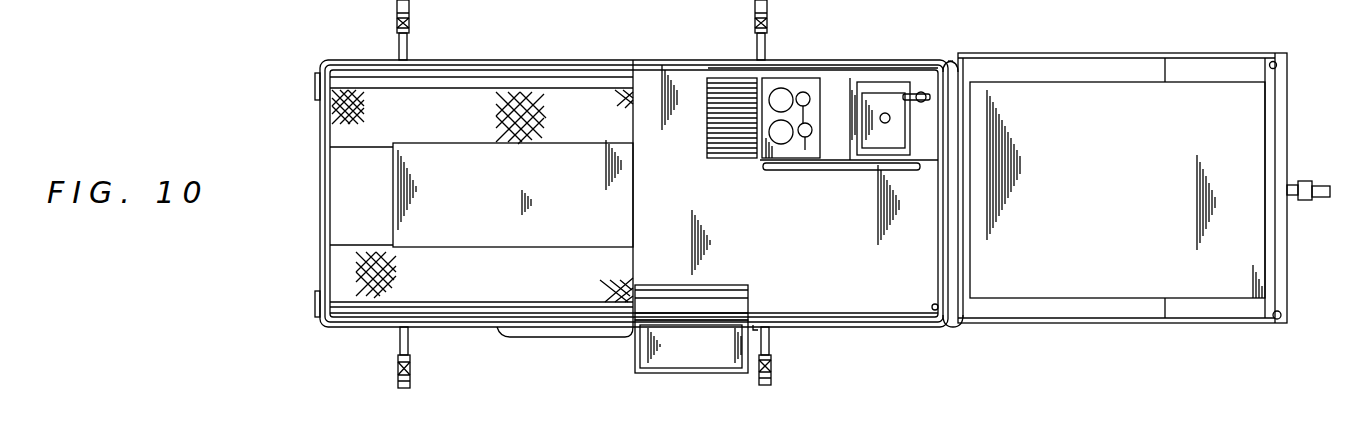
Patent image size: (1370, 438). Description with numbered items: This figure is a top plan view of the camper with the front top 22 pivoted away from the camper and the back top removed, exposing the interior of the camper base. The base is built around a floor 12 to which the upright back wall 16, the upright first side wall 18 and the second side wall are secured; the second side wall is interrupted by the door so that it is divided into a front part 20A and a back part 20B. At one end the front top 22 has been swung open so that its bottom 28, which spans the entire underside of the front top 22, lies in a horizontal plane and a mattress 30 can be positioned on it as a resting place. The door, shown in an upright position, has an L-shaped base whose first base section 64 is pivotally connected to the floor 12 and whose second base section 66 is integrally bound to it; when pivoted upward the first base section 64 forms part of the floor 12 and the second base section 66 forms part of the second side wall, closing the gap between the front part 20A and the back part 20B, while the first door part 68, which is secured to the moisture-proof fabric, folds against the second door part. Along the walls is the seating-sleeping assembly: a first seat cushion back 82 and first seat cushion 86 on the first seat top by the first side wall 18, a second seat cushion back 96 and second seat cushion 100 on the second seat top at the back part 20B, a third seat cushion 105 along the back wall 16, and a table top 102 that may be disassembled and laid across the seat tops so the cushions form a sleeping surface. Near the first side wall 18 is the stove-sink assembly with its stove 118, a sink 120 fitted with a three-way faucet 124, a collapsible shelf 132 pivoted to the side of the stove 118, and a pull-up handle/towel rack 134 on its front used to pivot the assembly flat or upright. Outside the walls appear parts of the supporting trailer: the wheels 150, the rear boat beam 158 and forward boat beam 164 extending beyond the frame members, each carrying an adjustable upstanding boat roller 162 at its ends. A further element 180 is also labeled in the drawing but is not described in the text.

The floor 12 is at (812, 251).
The upright back wall 16 is at (320, 178).
The upright first side wall 18 is at (684, 60).
The front part of the upright second side wall 20A is at (868, 327).
The back part of the upright second side wall 20B is at (498, 332).
The front top 22 is at (1230, 50).
The bottom of the front top 28 is at (1280, 58).
The mattress 30 is at (1223, 118).
The first base section 64 is at (772, 326).
The second base section 66 is at (702, 350).
The first door part 68 is at (660, 307).
The first seat cushion back 82 is at (487, 66).
The first seat cushion 86 is at (551, 105).
The second seat cushion back 96 is at (320, 322).
The second seat cushion 100 is at (487, 282).
The table top 102 is at (445, 230).
The third seat cushion 105 is at (360, 187).
The stove 118 is at (797, 90).
The sink 120 is at (870, 98).
The three-way faucet 124 is at (868, 173).
The collapsible shelf 132 is at (730, 122).
The pull-up handle/towel rack 134 is at (917, 97).
The wheels 150 is at (458, 3).
The rear boat beam 158 is at (392, 52).
The adjustable upstanding boat roller 162 is at (410, 24).
The forward boat beam 164 is at (762, 44).
The roof section 180 is at (1143, 4).